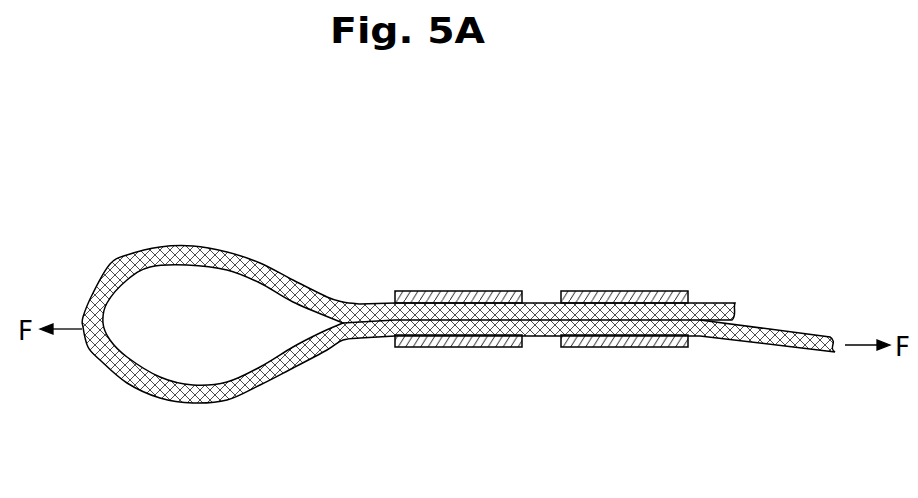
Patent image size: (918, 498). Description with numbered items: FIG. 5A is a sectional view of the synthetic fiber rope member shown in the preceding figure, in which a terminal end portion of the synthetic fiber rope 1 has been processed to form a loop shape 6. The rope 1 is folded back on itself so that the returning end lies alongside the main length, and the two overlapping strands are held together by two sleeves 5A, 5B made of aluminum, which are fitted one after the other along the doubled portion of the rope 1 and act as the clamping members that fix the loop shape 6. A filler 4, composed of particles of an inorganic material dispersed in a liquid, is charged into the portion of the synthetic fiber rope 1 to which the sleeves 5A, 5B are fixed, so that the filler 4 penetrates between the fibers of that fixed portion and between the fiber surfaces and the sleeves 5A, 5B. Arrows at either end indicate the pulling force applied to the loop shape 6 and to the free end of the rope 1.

The synthetic fiber rope 1 is at (207, 404).
The filler 4 is at (382, 336).
The sleeve 5A is at (517, 291).
The sleeve 5B is at (667, 291).
The loop shape 6 is at (182, 241).